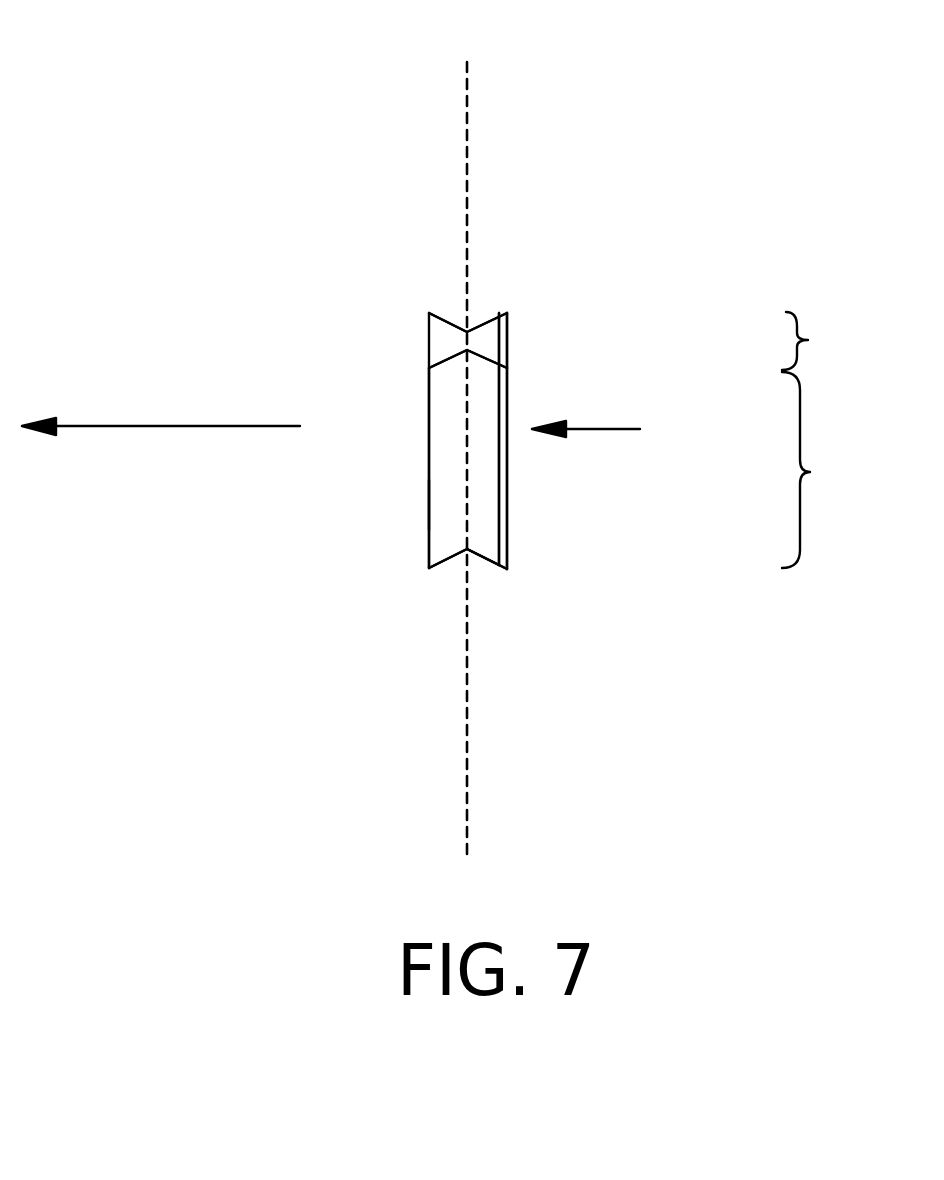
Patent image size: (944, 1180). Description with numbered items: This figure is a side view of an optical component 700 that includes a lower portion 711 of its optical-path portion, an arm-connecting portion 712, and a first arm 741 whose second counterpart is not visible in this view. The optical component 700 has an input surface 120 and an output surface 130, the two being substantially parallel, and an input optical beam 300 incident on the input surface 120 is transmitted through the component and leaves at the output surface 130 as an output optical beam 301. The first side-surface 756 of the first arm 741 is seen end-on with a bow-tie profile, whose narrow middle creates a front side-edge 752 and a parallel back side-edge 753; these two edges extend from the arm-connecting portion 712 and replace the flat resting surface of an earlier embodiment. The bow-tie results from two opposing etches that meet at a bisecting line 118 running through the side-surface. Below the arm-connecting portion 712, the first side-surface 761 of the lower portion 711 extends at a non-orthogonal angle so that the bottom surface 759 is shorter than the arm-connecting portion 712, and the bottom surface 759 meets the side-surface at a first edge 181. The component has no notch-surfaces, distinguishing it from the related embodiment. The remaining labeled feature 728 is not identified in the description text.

The optical component 700 is at (402, 128).
The bisecting line 118 is at (467, 805).
The first side-surface of the first arm 756 is at (487, 325).
The first arm 741 is at (490, 342).
The front side-edge 752 is at (500, 370).
The back side-edge 753 is at (427, 370).
The output surface 130 is at (428, 478).
The input surface 120 is at (507, 527).
The first side-surface of the lower portion 761 is at (445, 505).
The bottom surface 759 is at (452, 565).
The bottom right wall 728 is at (510, 553).
The first edge 181 is at (483, 562).
The input optical beam 300 is at (610, 428).
The output optical beam 301 is at (141, 428).
The arm-connecting portion 712 is at (822, 341).
The lower portion 711 is at (822, 470).